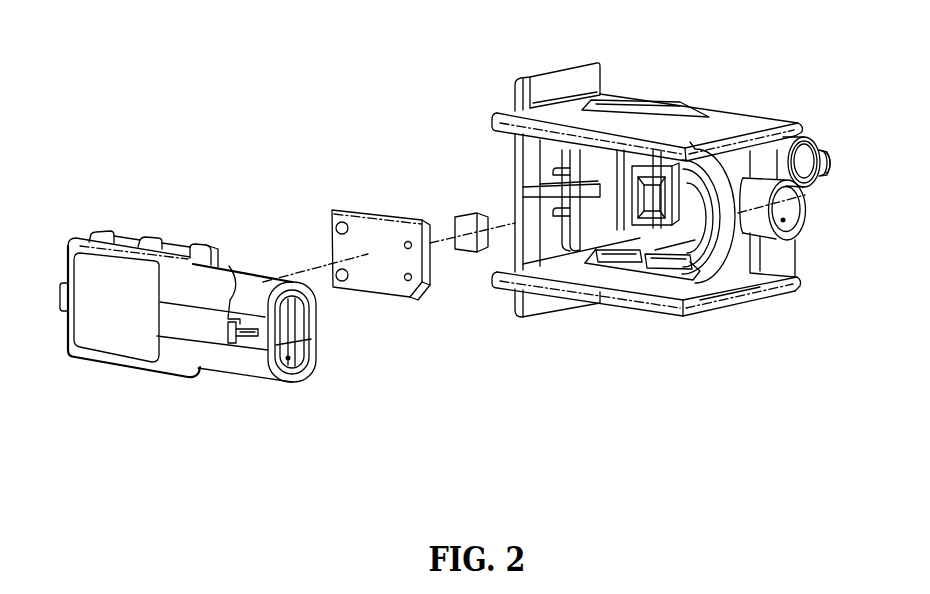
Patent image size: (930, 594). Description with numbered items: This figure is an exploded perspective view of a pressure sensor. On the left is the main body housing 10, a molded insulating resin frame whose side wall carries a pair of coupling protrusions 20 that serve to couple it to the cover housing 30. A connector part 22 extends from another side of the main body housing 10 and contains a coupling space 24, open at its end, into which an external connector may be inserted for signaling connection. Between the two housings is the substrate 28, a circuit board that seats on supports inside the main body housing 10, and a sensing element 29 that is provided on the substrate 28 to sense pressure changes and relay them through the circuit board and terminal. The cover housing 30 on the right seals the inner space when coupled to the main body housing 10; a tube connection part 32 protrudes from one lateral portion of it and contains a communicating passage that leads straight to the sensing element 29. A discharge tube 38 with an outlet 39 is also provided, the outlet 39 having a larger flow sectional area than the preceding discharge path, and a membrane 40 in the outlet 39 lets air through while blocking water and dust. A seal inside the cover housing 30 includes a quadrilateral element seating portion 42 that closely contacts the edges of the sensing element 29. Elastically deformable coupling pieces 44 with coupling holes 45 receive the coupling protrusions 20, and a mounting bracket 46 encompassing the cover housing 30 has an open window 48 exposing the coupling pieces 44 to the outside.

The main body housing 10 is at (109, 363).
The coupling protrusions 20 is at (123, 237).
The connector part 22 is at (217, 360).
The coupling space 24 is at (305, 366).
The substrate 28 is at (365, 217).
The sensing element 29 is at (465, 217).
The cover housing 30 is at (749, 110).
The tube connection part 32 is at (806, 160).
The discharge tube 38 is at (784, 221).
The outlet 39 is at (798, 243).
The membrane 40 is at (687, 240).
The element seating portion 42 is at (641, 165).
The coupling pieces 44 is at (620, 255).
The coupling holes 45 is at (608, 264).
The mounting bracket 46 is at (737, 304).
The open window 48 is at (605, 101).